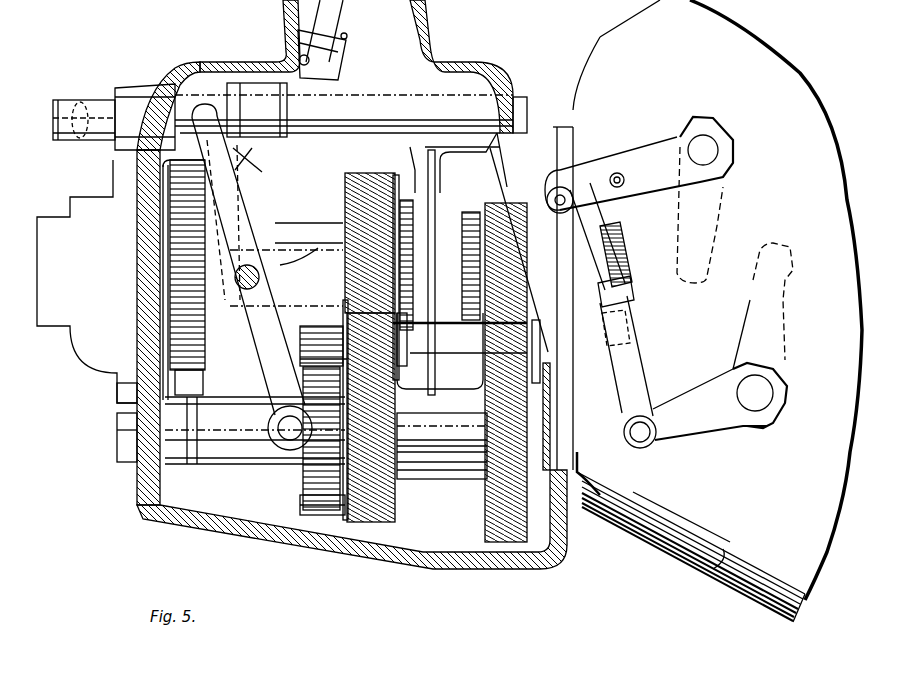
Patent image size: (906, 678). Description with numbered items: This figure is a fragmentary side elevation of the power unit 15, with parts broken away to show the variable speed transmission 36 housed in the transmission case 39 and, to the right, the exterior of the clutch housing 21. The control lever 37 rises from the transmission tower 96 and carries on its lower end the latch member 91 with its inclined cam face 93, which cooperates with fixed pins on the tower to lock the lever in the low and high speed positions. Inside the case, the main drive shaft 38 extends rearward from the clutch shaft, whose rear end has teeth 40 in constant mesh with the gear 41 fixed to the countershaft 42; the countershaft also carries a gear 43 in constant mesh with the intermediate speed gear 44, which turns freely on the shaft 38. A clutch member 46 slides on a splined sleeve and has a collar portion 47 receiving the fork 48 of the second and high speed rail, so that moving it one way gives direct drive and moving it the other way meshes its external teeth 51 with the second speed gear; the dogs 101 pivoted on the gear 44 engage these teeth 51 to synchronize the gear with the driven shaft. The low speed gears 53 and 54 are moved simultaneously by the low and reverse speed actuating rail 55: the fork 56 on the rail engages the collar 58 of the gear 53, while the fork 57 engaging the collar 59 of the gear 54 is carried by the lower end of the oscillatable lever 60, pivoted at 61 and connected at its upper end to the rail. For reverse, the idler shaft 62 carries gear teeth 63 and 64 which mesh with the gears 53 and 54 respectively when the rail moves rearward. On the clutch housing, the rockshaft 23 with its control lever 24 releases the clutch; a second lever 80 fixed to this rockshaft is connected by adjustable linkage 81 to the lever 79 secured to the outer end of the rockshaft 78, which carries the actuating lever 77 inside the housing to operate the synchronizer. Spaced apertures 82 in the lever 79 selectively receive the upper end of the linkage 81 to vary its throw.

The power unit 15 is at (650, 535).
The clutch housing 21 is at (710, 565).
The rockshaft 23 is at (755, 399).
The control lever 24 is at (787, 339).
The variable speed transmission 36 is at (129, 510).
The control lever 37 is at (290, 28).
The main drive shaft 38 is at (280, 243).
The transmission case 39 is at (137, 173).
The teeth 40 is at (495, 200).
The gear 41 is at (500, 469).
The countershaft 42 is at (433, 462).
The gear 43 is at (380, 519).
The intermediate speed gear 44 is at (343, 184).
The clutch member 46 is at (484, 376).
The collar portion 47 is at (462, 368).
The fork 48 is at (440, 187).
The external teeth 51 is at (403, 203).
The low speed gear 53 is at (183, 259).
The low speed gear 54 is at (327, 505).
The low and reverse speed actuating rail 55 is at (100, 107).
The fork 56 is at (240, 156).
The fork 57 is at (267, 479).
The collar 58 is at (233, 333).
The collar 59 is at (287, 478).
The oscillatable lever 60 is at (243, 214).
The pivot 61 is at (308, 248).
The idler shaft 62 is at (117, 399).
The gear teeth 63 is at (208, 391).
The gear teeth 64 is at (310, 333).
The actuating lever 77 is at (727, 223).
The rockshaft 78 is at (707, 157).
The lever 79 is at (643, 160).
The lever 80 is at (683, 403).
The linkage 81 is at (623, 303).
The apertures 82 is at (612, 176).
The latch member 91 is at (343, 62).
The cam face 93 is at (347, 36).
The transmission tower 96 is at (423, 30).
The dogs 101 is at (400, 175).